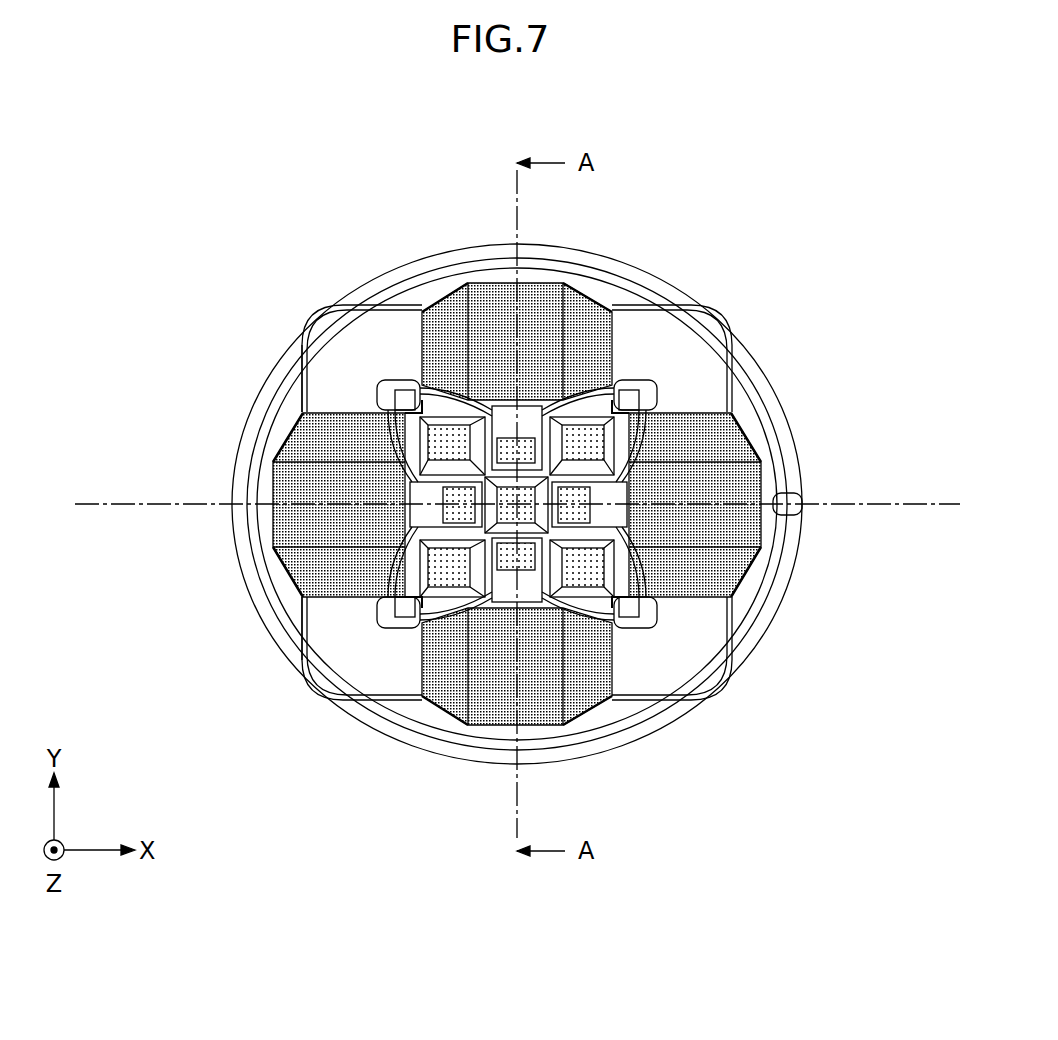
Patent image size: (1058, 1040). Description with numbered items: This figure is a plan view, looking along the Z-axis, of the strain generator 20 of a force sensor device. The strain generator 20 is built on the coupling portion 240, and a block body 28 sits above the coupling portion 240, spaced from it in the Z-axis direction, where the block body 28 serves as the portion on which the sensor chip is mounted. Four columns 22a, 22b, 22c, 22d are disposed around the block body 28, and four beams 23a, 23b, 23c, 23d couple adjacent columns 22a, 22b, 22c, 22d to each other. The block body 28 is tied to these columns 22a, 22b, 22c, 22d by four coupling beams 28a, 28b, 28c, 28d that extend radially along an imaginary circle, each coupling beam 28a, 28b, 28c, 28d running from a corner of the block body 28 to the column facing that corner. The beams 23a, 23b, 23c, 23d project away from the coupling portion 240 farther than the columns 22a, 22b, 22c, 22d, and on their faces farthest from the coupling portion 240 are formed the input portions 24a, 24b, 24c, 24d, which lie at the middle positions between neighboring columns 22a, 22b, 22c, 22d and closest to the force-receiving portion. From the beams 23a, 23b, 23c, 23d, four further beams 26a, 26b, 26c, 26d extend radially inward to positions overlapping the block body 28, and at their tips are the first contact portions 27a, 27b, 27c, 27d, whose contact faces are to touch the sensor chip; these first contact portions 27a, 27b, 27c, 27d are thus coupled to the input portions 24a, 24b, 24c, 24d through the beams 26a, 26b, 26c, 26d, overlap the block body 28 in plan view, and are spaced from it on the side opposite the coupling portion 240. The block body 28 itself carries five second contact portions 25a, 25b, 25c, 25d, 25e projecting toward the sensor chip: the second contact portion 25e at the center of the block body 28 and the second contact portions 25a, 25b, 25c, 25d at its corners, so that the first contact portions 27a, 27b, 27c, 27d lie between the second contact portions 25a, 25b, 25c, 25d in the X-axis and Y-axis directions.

The strain generator 20 is at (93, 139).
The column 22a is at (330, 698).
The column 22b is at (320, 323).
The column 22c is at (712, 322).
The column 22d is at (718, 686).
The beam 23a is at (285, 548).
The beam 23b is at (438, 300).
The beam 23c is at (745, 560).
The beam 23d is at (590, 715).
The input portion 24a is at (305, 484).
The input portion 24b is at (497, 312).
The input portion 24c is at (730, 484).
The input portion 24d is at (540, 700).
The second contact portion 25a is at (420, 602).
The second contact portion 25b is at (440, 412).
The second contact portion 25c is at (600, 400).
The second contact portion 25d is at (660, 595).
The second contact portion 25e is at (523, 512).
The beam 26a is at (440, 500).
The beam 26b is at (522, 447).
The beam 26c is at (595, 500).
The beam 26d is at (515, 556).
The first contact portion 27a is at (447, 442).
The first contact portion 27b is at (583, 442).
The first contact portion 27c is at (583, 567).
The first contact portion 27d is at (448, 568).
The block body 28 is at (405, 545).
The coupling beam 28a is at (395, 620).
The coupling beam 28b is at (410, 398).
The coupling beam 28c is at (648, 400).
The coupling beam 28d is at (640, 618).
The coupling portion 240 is at (302, 668).